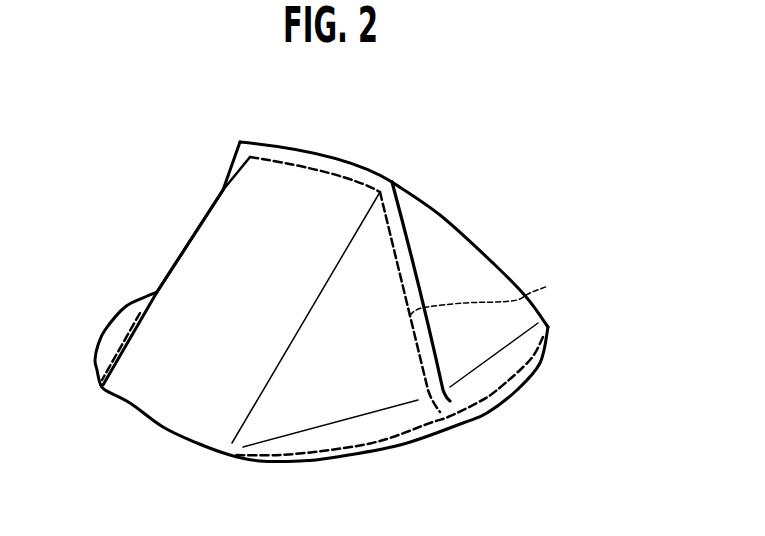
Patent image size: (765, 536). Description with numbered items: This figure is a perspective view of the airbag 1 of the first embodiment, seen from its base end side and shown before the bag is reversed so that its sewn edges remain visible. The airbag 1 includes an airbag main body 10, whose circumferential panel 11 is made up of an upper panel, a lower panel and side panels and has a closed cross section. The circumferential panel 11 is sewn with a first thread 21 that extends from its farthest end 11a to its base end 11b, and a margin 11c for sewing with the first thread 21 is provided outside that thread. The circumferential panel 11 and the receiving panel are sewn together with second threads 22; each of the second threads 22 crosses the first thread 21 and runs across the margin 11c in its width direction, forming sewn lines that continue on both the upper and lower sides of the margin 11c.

The airbag 1 is at (473, 197).
The airbag main body 10 is at (495, 265).
The circumferential panel 11 is at (210, 247).
The farthest end 11a is at (450, 400).
The base end 11b is at (392, 182).
The margin 11c is at (453, 398).
The first thread 21 is at (342, 284).
The second threads 22 is at (380, 440).